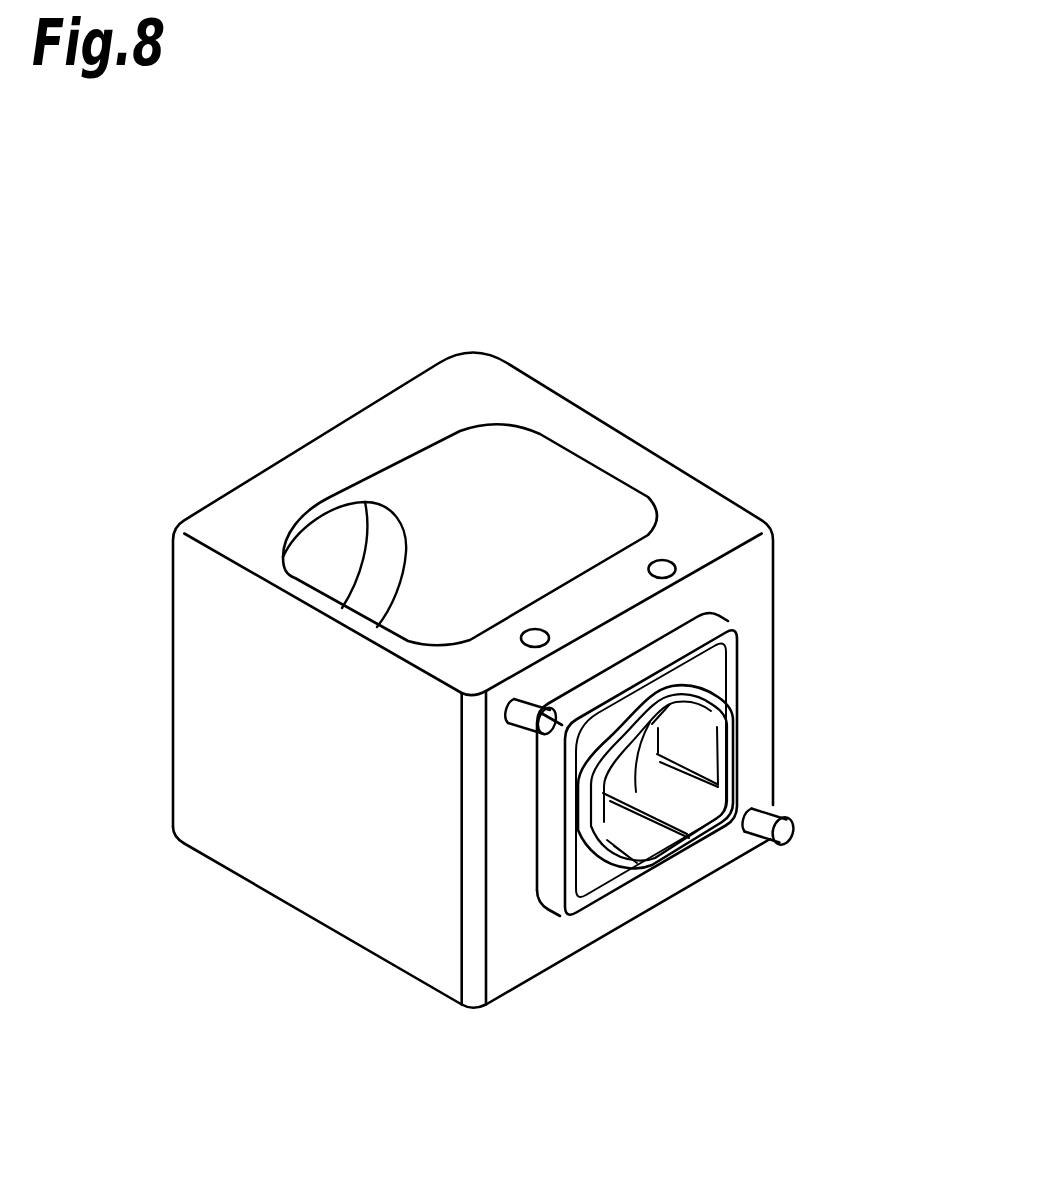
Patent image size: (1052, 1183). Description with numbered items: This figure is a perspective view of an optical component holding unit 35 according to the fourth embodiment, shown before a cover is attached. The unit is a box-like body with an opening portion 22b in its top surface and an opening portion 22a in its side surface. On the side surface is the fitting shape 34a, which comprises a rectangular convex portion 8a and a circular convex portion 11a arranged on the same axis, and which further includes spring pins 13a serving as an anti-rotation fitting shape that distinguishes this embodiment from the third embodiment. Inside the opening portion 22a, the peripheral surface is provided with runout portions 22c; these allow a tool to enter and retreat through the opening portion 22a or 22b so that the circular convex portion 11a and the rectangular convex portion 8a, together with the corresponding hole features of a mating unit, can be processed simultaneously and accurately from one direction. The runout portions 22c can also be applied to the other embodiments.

The optical component holding unit 35 is at (243, 250).
The opening portion 22a is at (690, 710).
The opening portion 22b is at (300, 543).
The runout portions 22c is at (612, 753).
The rectangular convex portion 8a is at (555, 865).
The circular convex portion 11a is at (583, 838).
The spring pins 13a is at (515, 727).
The fitting shape 34a is at (633, 889).